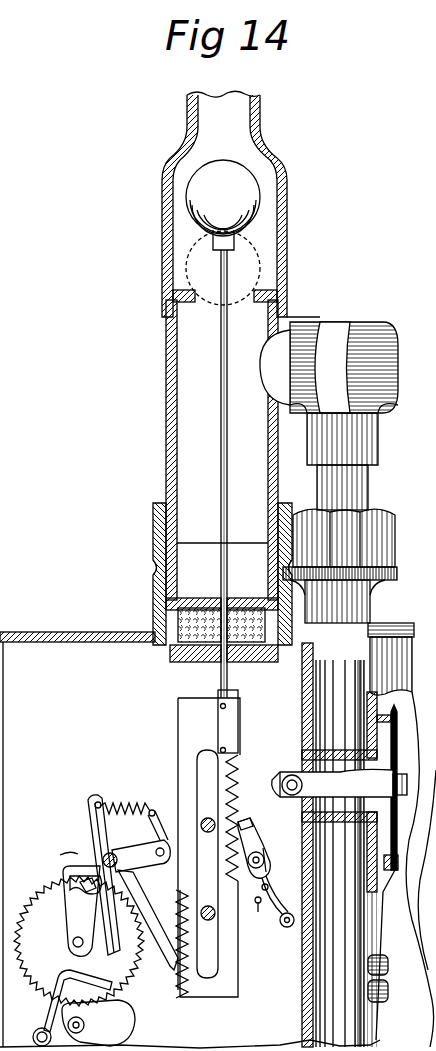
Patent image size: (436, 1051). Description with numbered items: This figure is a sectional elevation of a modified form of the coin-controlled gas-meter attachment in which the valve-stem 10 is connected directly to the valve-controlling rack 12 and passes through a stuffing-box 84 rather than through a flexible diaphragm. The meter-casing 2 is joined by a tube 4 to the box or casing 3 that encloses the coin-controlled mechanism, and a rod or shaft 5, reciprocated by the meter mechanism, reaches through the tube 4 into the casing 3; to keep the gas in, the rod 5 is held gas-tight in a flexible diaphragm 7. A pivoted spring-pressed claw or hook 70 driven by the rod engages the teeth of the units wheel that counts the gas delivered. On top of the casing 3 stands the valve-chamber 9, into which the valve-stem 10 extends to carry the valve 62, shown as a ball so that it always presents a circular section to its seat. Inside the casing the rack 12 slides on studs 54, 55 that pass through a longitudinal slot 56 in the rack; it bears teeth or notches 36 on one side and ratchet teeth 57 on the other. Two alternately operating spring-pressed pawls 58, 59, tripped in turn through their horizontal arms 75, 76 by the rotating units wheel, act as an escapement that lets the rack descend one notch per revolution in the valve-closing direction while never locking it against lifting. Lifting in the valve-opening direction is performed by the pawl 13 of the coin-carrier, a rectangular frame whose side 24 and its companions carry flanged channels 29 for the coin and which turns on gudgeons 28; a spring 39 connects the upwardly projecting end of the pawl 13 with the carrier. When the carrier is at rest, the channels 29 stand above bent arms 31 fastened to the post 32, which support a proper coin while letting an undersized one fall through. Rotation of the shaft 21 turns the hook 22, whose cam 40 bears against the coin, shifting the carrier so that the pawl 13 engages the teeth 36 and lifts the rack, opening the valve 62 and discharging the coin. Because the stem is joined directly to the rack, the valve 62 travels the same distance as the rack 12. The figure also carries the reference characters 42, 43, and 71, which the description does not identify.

The meter-casing 2 is at (348, 684).
The box or casing 3 is at (190, 829).
The tube 4 is at (339, 845).
The rod or shaft 5 is at (339, 783).
The flexible diaphragm 7 is at (393, 787).
The valve-chamber 9 is at (224, 204).
The valve-stem 10 is at (236, 474).
The valve-controlling rack 12 is at (184, 757).
The pawl 13 is at (148, 920).
The shaft 21 is at (73, 941).
The hook 22 is at (72, 868).
The side 24 is at (90, 875).
The gudgeons 28 is at (115, 867).
The flanged channels 29 is at (100, 884).
The bent arms 31 is at (75, 995).
The post 32 is at (32, 1039).
The teeth or notches 36 is at (169, 944).
The spring 39 is at (127, 799).
The cam 40 is at (81, 911).
The ratchet wheel 42 is at (42, 890).
The cam lever 43 is at (98, 1023).
The stud 54 is at (200, 820).
The stud 55 is at (208, 920).
The longitudinal slot 56 is at (209, 756).
The ratchet teeth 57 is at (246, 818).
The pawl or click 58 is at (262, 842).
The pawl or click 59 is at (247, 828).
The valve 62 is at (223, 232).
The claw or hook 70 is at (283, 775).
The hook tip 71 is at (75, 848).
The horizontal arm 75 is at (270, 886).
The horizontal arm 76 is at (280, 921).
The stuffing-box 84 is at (244, 660).